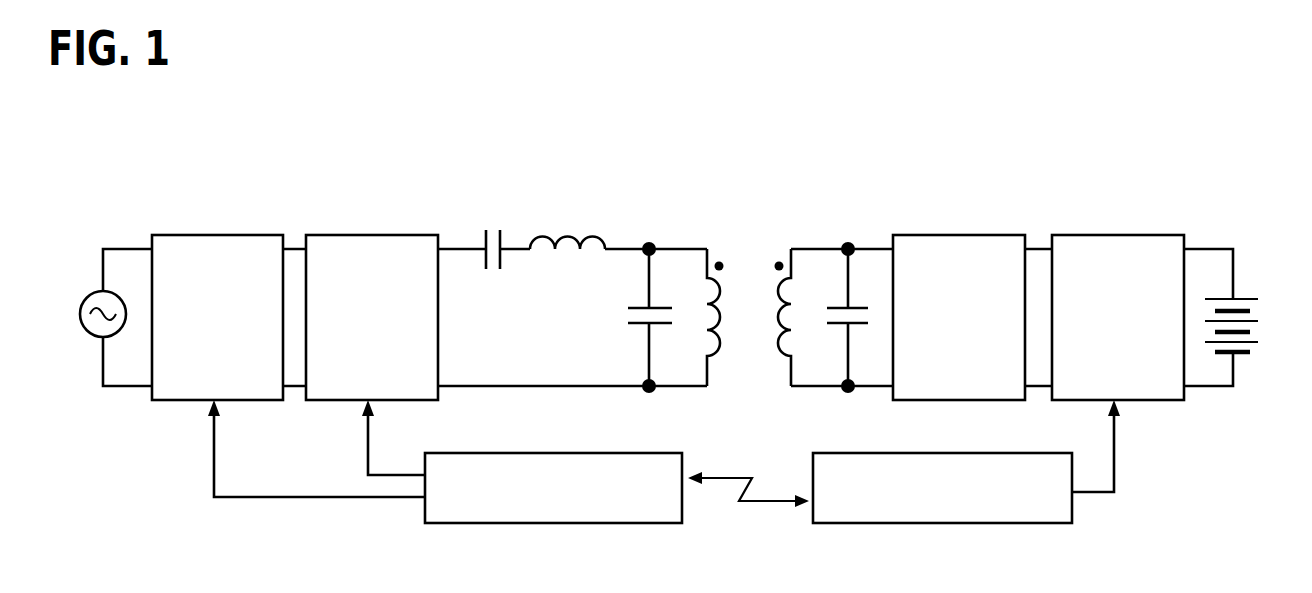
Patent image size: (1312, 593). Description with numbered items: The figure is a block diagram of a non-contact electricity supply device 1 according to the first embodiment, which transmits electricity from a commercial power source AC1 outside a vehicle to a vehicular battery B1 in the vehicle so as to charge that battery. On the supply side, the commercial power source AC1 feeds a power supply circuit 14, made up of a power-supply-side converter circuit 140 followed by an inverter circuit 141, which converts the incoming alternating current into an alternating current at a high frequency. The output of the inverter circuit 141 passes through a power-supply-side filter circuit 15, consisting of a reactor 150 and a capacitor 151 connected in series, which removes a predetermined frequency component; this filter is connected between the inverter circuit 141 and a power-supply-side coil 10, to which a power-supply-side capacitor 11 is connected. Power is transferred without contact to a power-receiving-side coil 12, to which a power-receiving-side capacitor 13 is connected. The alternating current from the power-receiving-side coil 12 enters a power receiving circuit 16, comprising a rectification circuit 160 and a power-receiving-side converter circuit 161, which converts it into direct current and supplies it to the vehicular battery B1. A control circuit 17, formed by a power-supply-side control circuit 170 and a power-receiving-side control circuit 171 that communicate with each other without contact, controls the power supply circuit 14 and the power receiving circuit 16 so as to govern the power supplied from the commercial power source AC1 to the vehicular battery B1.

The non-contact electricity supply device 1 is at (1027, 103).
The power-supply-side coil 10 is at (716, 247).
The power-supply-side capacitor 11 is at (630, 332).
The power-receiving-side coil 12 is at (782, 247).
The power-receiving-side capacitor 13 is at (855, 330).
The power supply circuit 14 is at (306, 178).
The power-supply-side converter circuit 140 is at (220, 235).
The inverter circuit 141 is at (368, 235).
The power-supply-side filter circuit 15 is at (549, 203).
The reactor 150 is at (567, 258).
The capacitor 151 is at (497, 275).
The power receiving circuit 16 is at (1042, 203).
The rectification circuit 160 is at (963, 235).
The power-receiving-side converter circuit 161 is at (1113, 235).
The control circuit 17 is at (746, 548).
The power-supply-side control circuit 170 is at (573, 527).
The power-receiving-side control circuit 171 is at (907, 527).
The commercial power source AC1 is at (88, 297).
The vehicular battery B1 is at (1240, 297).